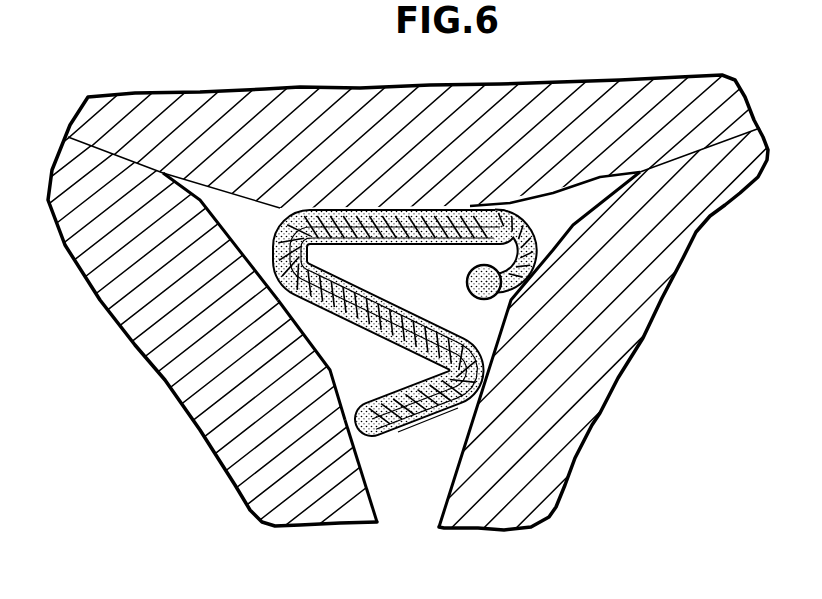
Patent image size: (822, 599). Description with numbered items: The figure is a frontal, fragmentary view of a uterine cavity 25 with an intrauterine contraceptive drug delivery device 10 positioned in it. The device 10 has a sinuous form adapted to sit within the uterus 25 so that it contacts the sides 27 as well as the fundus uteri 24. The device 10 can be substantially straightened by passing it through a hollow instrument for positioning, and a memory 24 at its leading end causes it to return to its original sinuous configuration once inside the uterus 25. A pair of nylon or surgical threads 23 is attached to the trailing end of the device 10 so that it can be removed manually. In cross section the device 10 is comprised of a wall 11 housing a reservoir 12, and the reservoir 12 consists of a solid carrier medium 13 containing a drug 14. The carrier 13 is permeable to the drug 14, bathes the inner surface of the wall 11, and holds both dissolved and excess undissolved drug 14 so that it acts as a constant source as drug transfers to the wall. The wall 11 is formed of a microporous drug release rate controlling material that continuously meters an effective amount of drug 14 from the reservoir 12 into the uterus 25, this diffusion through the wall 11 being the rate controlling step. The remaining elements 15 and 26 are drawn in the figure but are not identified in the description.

The intrauterine contraceptive drug delivery device 10 is at (513, 341).
The wall 11 is at (538, 252).
The reservoir 12 is at (374, 404).
The solid carrier medium 13 is at (411, 404).
The drug 14 is at (408, 425).
The intermediate layer 15 is at (448, 418).
The nylon or surgical threads 23 is at (386, 520).
The fundus uteri 24 is at (467, 281).
The uterine cavity 25 is at (252, 210).
The groove corner 26 is at (266, 198).
The sides 27 is at (333, 375).